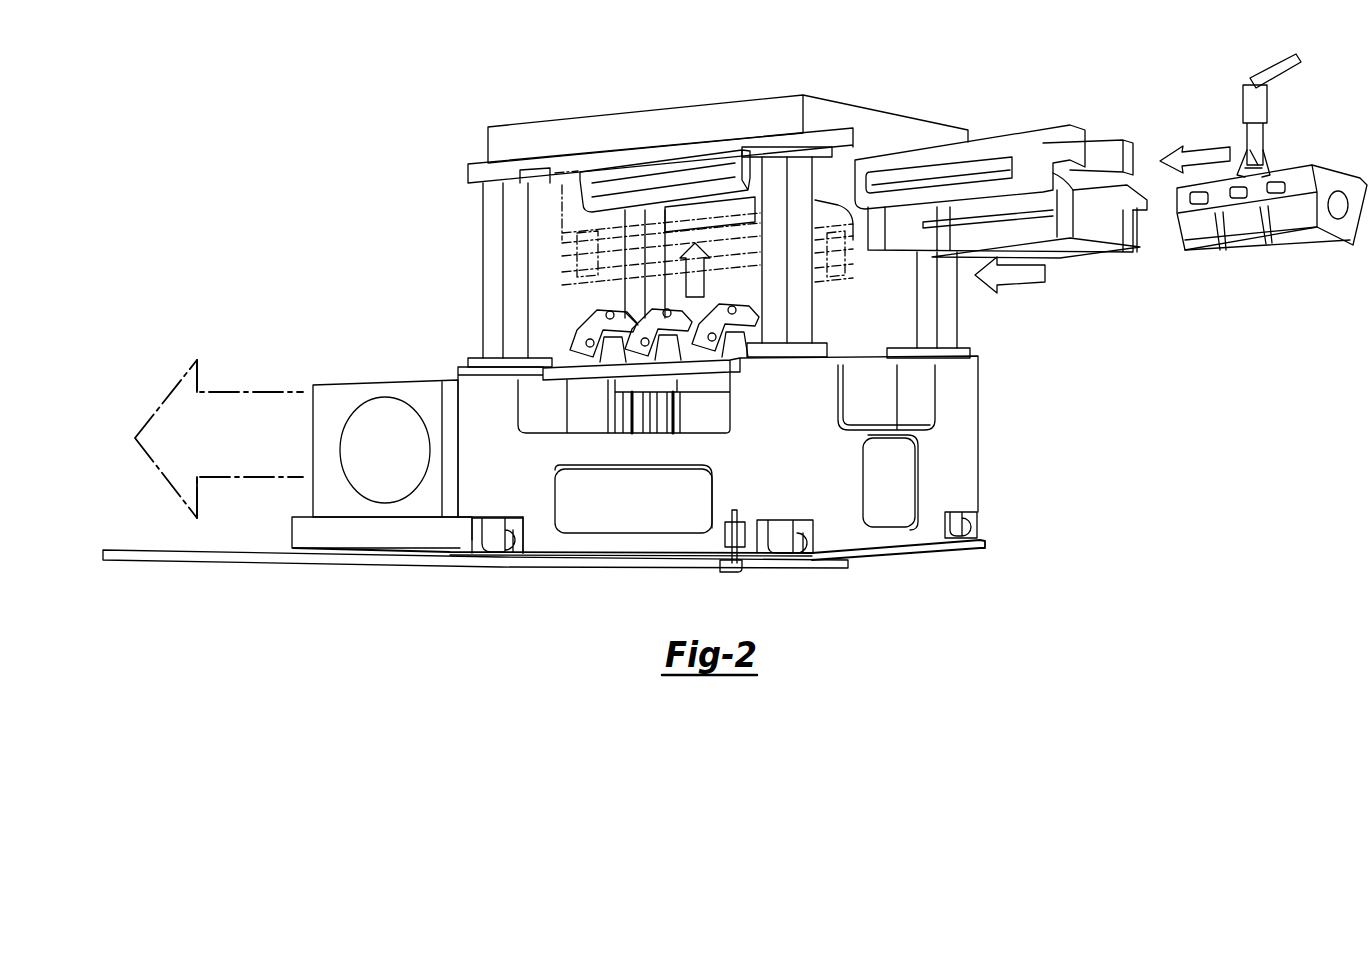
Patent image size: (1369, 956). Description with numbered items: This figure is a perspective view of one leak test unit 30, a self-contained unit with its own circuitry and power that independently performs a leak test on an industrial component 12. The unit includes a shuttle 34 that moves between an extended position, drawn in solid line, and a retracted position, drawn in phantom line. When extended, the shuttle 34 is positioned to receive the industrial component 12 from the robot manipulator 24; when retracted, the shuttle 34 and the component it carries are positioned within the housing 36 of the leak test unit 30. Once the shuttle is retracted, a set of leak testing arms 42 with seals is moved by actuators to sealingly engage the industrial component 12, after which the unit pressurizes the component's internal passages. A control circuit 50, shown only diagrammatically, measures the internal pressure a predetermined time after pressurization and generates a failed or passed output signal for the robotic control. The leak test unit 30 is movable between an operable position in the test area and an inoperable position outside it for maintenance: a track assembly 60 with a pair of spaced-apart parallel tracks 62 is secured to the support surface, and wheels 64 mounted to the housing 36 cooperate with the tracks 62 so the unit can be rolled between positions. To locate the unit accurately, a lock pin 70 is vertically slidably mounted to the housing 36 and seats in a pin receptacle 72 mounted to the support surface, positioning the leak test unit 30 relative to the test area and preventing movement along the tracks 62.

The industrial component 12 is at (1343, 235).
The robot manipulator 24 is at (1250, 140).
The leak test unit 30 is at (918, 570).
The shuttle 34 is at (562, 222).
The housing 36 is at (973, 403).
The leak testing arms 42 is at (640, 307).
The control circuit 50 is at (426, 508).
The track assembly 60 is at (843, 584).
The tracks 62 is at (982, 545).
The wheels 64 is at (970, 528).
The lock pin 70 is at (733, 515).
The pin receptacle 72 is at (722, 572).